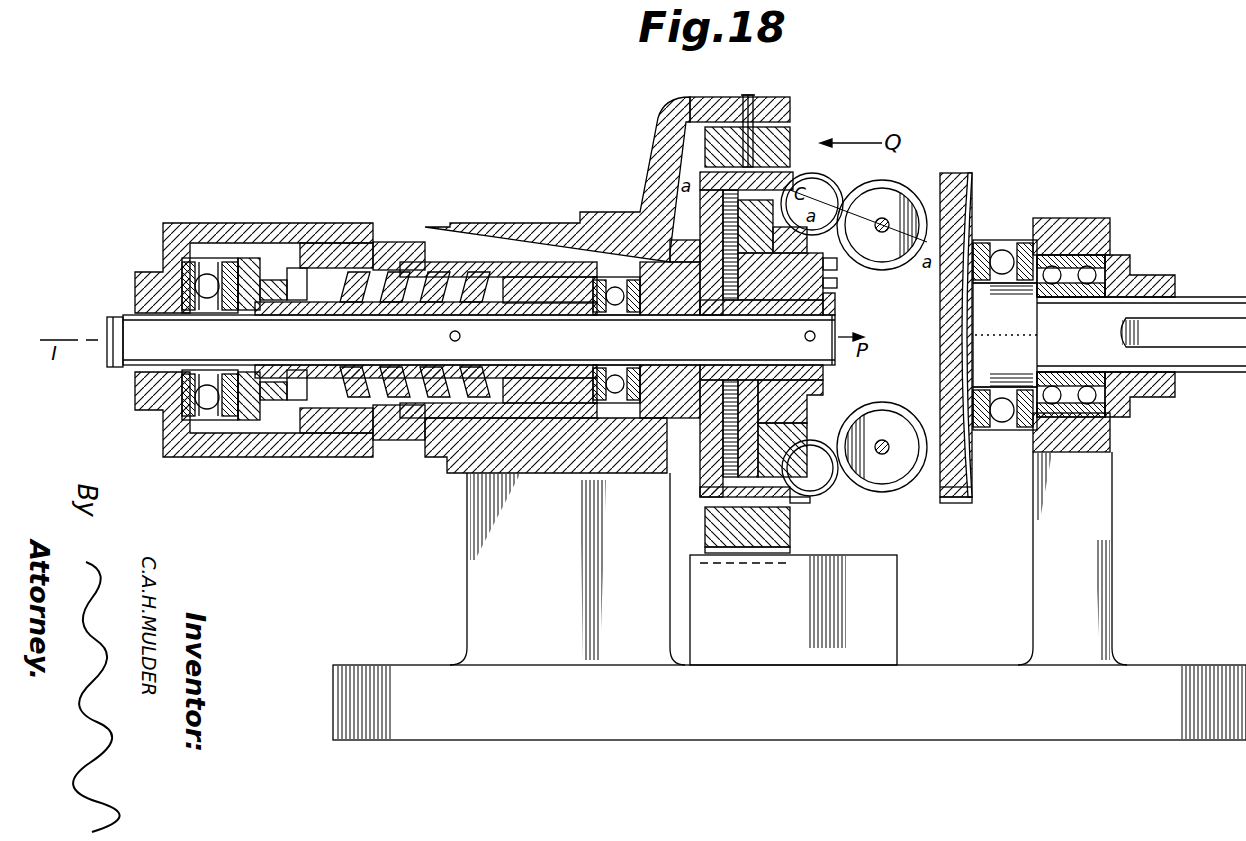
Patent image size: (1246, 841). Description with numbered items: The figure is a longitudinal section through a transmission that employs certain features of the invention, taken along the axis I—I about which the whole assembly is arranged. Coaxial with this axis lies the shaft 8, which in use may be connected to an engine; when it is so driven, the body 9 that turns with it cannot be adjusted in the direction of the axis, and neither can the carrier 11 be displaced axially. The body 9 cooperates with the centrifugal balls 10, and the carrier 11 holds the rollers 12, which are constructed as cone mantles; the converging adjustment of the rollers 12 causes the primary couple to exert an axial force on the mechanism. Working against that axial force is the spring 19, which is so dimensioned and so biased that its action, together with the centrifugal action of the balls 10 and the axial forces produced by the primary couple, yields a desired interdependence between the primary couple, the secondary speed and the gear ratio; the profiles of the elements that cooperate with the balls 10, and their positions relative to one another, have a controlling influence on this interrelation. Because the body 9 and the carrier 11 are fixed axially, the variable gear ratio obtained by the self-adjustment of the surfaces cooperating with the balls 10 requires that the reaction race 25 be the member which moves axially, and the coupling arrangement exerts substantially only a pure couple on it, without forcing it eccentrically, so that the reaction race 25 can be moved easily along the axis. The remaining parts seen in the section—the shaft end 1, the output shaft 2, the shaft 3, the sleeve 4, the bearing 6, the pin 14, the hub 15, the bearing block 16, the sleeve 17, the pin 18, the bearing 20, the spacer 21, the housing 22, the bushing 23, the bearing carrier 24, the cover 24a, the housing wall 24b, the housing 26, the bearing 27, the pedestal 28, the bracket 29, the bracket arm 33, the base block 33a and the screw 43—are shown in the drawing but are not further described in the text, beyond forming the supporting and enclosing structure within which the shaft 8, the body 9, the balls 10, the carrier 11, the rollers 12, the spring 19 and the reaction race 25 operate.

The shaft end 1 is at (122, 318).
The output shaft 2 is at (1190, 300).
The shaft 3 is at (526, 312).
The bearing sleeve 4 is at (693, 308).
The ball bearing 6 is at (1108, 253).
The shaft 8 is at (834, 284).
The body 9 is at (836, 267).
The centrifugal balls 10 is at (828, 190).
The carrier 11 is at (950, 500).
The rollers 12 is at (886, 184).
The pin 14 is at (876, 346).
The hub 15 is at (984, 430).
The bearing block 16 is at (1108, 459).
The sleeve 17 is at (480, 312).
The pin 18 is at (450, 336).
The spring 19 is at (342, 372).
The ball bearing 20 is at (226, 258).
The spacer 21 is at (257, 258).
The housing 22 is at (174, 232).
The bushing 23 is at (340, 243).
The bearing carrier 24 is at (545, 232).
The cover 24a is at (392, 242).
The housing wall 24b is at (671, 474).
The reaction race 25 is at (797, 178).
The housing 26 is at (650, 196).
The ball bearing 27 is at (599, 365).
The pedestal 28 is at (541, 462).
The bracket 29 is at (792, 150).
The bracket arm 33 is at (722, 100).
The base block 33a is at (880, 584).
The screw 43 is at (757, 100).